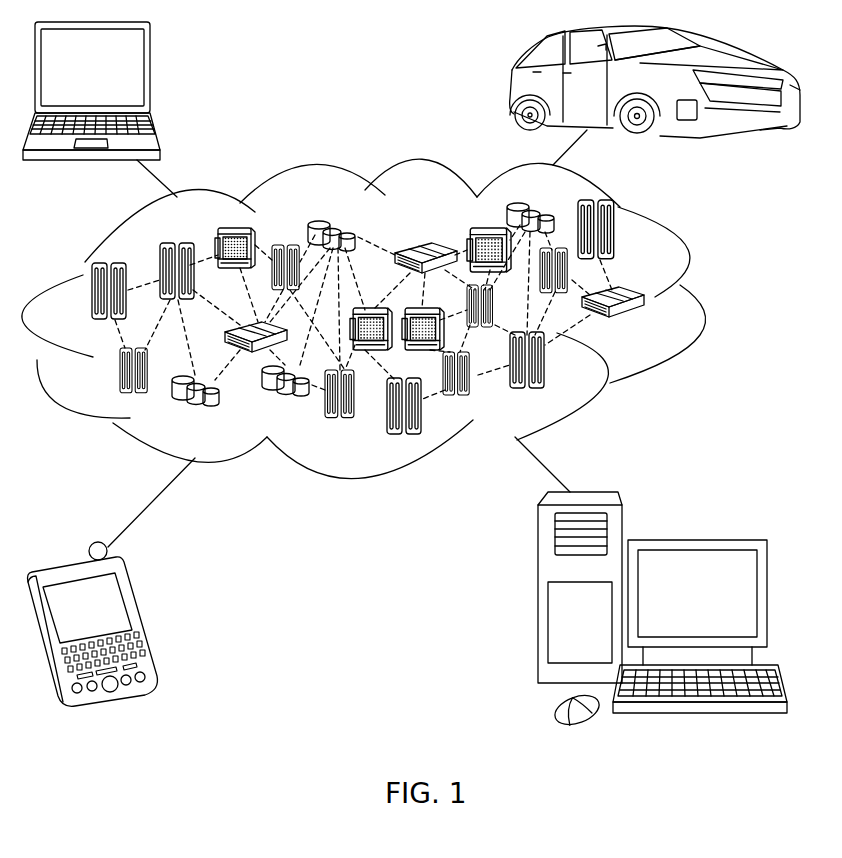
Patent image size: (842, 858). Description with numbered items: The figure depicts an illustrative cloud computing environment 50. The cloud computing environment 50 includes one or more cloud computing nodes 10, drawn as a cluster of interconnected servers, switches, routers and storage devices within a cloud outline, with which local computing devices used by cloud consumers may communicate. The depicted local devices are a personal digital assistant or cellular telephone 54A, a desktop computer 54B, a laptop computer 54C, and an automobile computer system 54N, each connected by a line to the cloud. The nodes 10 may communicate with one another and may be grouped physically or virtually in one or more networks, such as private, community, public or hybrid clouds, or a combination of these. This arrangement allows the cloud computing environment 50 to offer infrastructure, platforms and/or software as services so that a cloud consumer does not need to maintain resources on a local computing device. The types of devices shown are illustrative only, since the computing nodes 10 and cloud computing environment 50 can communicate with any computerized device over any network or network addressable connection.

The cloud computing nodes 10 is at (650, 328).
The cloud computing environment 50 is at (695, 302).
The personal digital assistant or cellular telephone 54A is at (143, 621).
The desktop computer 54B is at (696, 540).
The laptop computer 54C is at (151, 72).
The automobile computer system 54N is at (516, 86).